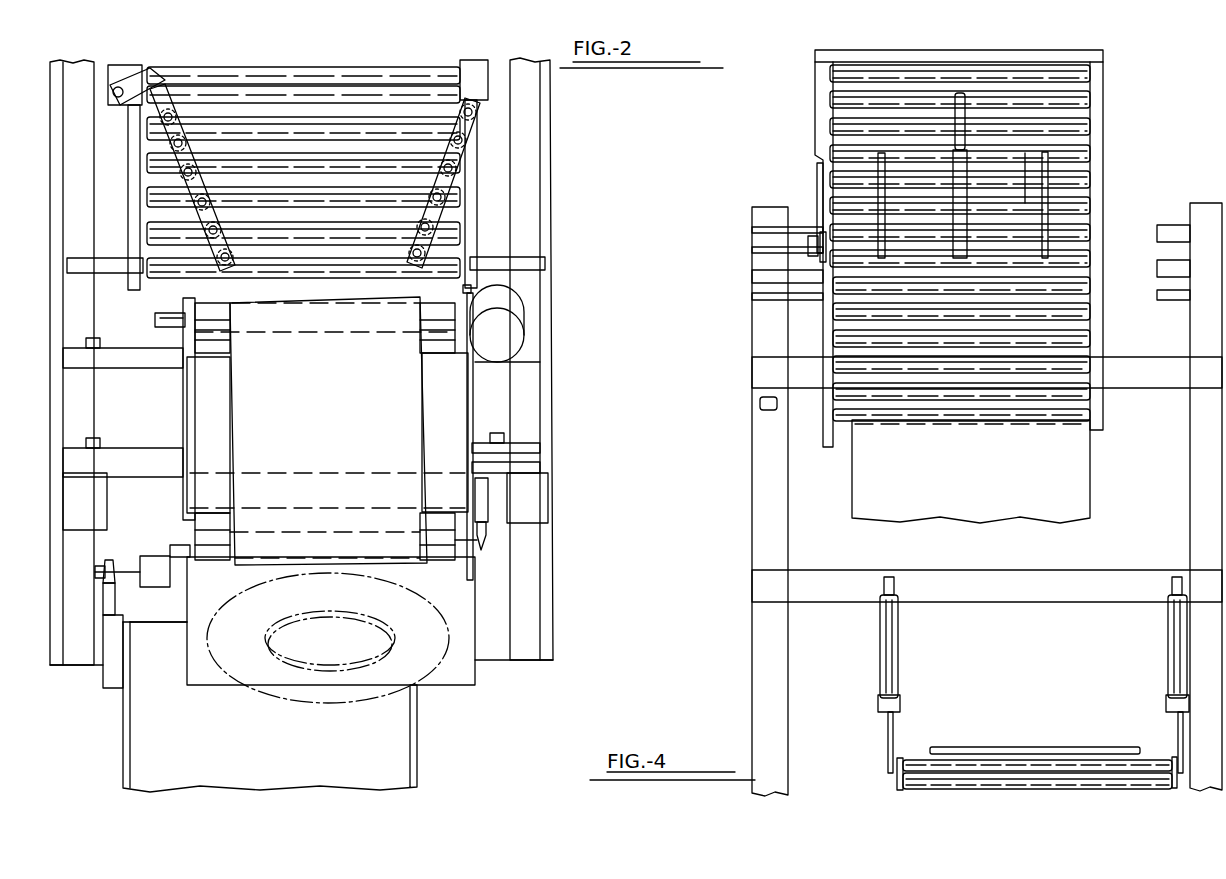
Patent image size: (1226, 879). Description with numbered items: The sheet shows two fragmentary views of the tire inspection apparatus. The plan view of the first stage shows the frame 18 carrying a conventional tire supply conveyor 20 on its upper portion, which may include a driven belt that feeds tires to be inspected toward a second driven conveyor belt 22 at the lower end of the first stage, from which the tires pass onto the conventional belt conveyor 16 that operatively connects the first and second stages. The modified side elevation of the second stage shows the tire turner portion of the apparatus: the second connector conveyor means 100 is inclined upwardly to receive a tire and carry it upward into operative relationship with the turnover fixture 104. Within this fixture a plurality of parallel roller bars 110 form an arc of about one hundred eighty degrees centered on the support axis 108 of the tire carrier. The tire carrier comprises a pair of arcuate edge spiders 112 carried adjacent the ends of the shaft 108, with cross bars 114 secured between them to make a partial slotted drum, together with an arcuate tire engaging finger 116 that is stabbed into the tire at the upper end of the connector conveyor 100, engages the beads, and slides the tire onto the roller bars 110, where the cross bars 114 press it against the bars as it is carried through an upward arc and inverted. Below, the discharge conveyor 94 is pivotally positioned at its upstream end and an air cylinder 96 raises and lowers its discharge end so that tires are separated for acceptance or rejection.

In FIG. 2, the belt conveyor 16 is at (393, 752).
In FIG. 2, the frame 18 is at (550, 274).
In FIG. 2, the tire supply conveyor 20 is at (485, 189).
In FIG. 2, the second driven conveyor belt 22 is at (413, 430).
In FIG. 4, the discharge conveyor 94 is at (1000, 748).
In FIG. 4, the air cylinder 96 is at (893, 668).
In FIG. 4, the second connector conveyor means 100 is at (1078, 494).
In FIG. 4, the turnover fixture 104 is at (823, 155).
In FIG. 4, the support axis 108 is at (818, 252).
In FIG. 4, the roller bars 110 is at (836, 121).
In FIG. 4, the edge spiders 112 is at (878, 192).
In FIG. 4, the cross bars 114 is at (1025, 153).
In FIG. 4, the tire engaging finger 116 is at (962, 100).